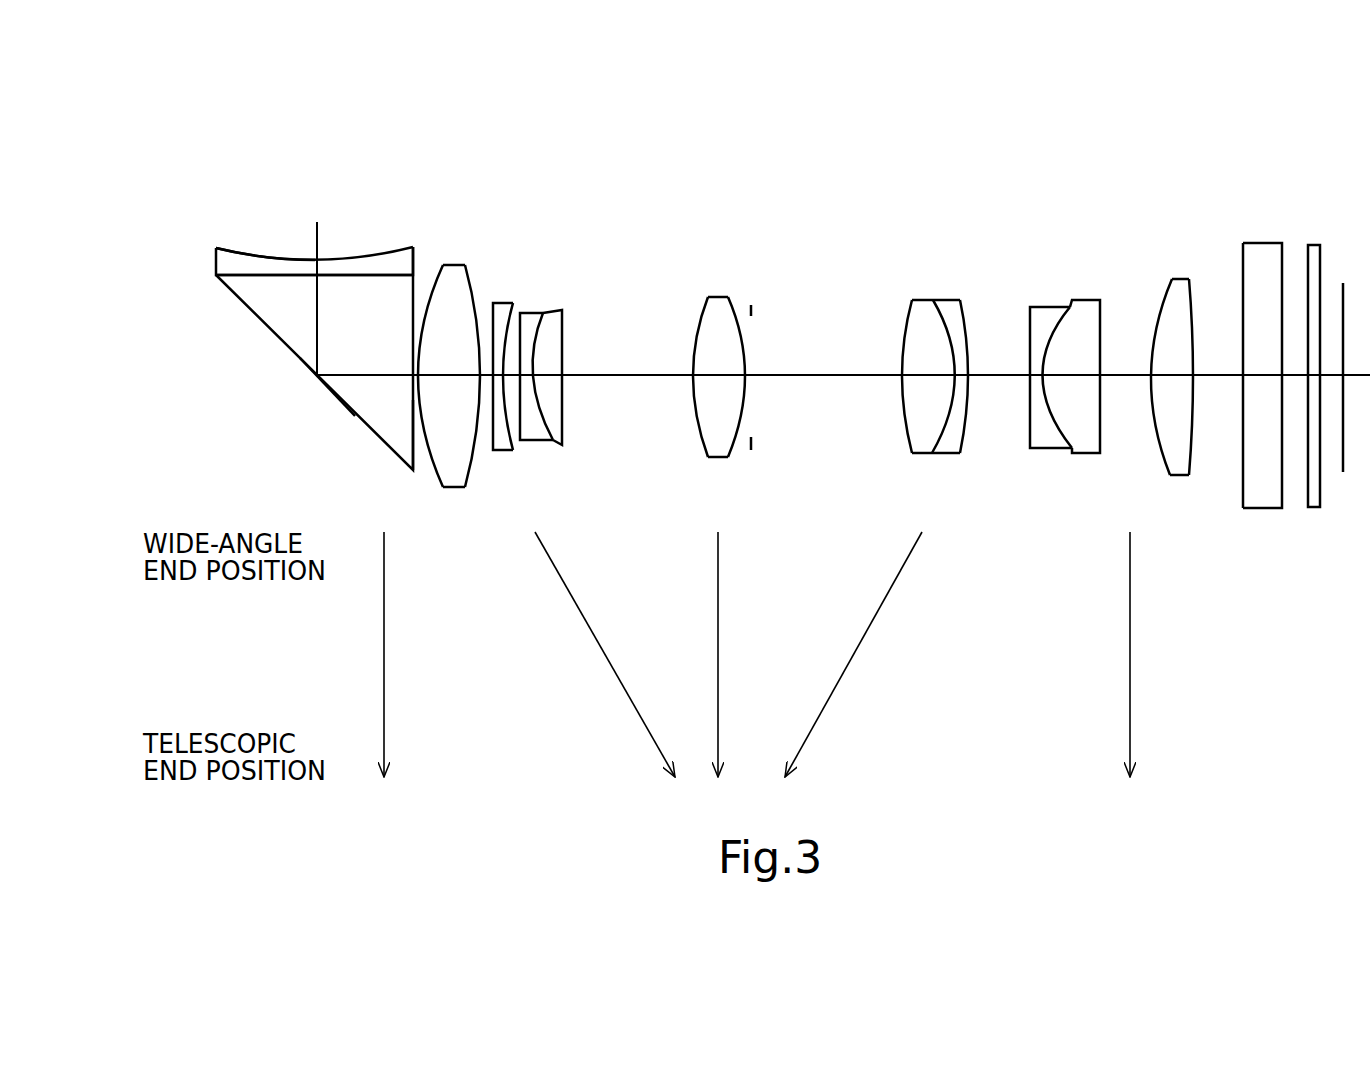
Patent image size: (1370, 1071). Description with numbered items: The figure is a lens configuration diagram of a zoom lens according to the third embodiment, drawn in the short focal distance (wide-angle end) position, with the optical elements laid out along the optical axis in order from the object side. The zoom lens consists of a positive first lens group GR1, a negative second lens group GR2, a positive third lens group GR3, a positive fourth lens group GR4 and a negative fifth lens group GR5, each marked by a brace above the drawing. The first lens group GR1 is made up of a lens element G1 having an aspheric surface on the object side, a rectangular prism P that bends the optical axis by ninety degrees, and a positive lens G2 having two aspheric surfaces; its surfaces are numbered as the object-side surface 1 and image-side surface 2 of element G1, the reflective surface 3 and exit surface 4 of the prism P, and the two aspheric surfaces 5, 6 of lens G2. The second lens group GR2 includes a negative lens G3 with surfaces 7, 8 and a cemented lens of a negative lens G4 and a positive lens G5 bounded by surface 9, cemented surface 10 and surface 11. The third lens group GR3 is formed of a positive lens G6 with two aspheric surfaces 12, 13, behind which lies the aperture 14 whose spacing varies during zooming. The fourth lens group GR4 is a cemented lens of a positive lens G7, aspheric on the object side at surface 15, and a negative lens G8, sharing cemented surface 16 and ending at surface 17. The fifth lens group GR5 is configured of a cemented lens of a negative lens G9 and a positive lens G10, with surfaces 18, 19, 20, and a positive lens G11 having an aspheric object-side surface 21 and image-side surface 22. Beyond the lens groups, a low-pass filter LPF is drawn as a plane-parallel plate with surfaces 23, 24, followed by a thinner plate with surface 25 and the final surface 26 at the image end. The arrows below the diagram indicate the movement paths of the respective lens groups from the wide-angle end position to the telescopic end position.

The first surface 1 is at (248, 256).
The second surface 2 is at (250, 280).
The third surface 3 is at (355, 416).
The fourth surface 4 is at (417, 462).
The fifth surface 5 is at (435, 478).
The sixth surface 6 is at (473, 477).
The seventh surface 7 is at (488, 440).
The eighth surface 8 is at (505, 362).
The ninth surface 9 is at (515, 370).
The tenth surface 10 is at (535, 395).
The eleventh surface 11 is at (562, 425).
The twelfth surface 12 is at (700, 320).
The thirteenth surface 13 is at (742, 450).
The aperture 14 is at (751, 308).
The fifteenth surface 15 is at (905, 340).
The sixteenth surface 16 is at (950, 405).
The seventeenth surface 17 is at (968, 318).
The eighteenth surface 18 is at (1025, 432).
The nineteenth surface 19 is at (1052, 335).
The twentieth surface 20 is at (1103, 432).
The twenty-first surface 21 is at (1160, 458).
The twenty-second surface 22 is at (1192, 305).
The twenty-third surface 23 is at (1243, 478).
The twenty-fourth surface 24 is at (1282, 493).
The twenty-fifth surface 25 is at (1308, 493).
The twenty-sixth surface 26 is at (1321, 493).
The prism G1 is at (290, 275).
The rectangular prism P is at (381, 296).
The positive lens G2 is at (453, 272).
The negative lens G3 is at (505, 308).
The negative lens G4 is at (535, 320).
The positive lens G5 is at (557, 320).
The positive lens G6 is at (718, 302).
The positive lens G7 is at (922, 305).
The negative lens G8 is at (946, 305).
The negative lens G9 is at (1050, 312).
The positive lens G10 is at (1088, 305).
The positive lens G11 is at (1180, 287).
The low-pass filter LPF is at (1262, 256).
The first lens group GR1 is at (190, 125).
The second lens group GR2 is at (480, 125).
The third lens group GR3 is at (738, 125).
The fourth lens group GR4 is at (975, 125).
The fifth lens group GR5 is at (1023, 125).